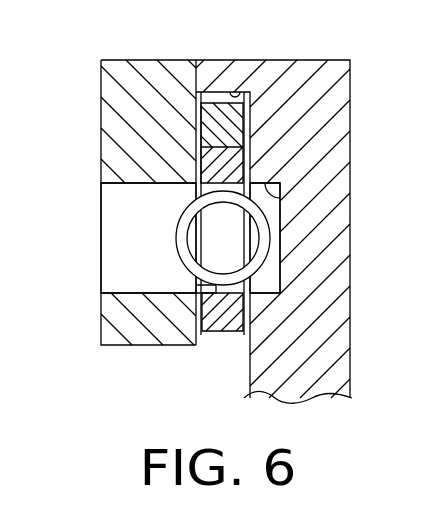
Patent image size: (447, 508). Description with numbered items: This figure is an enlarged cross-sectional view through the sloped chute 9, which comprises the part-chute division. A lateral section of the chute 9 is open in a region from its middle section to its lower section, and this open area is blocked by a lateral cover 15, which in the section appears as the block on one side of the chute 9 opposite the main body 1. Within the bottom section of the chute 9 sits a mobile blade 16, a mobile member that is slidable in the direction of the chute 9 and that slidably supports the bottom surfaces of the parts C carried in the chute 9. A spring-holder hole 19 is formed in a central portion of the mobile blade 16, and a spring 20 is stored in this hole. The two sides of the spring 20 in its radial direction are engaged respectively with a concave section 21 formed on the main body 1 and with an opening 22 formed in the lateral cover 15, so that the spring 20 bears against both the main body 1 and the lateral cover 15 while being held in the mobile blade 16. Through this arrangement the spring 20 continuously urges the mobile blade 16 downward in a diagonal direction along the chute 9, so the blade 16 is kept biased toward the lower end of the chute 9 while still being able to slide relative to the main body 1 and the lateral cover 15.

The main body 1 is at (350, 100).
The sloped chute 9 is at (246, 90).
The lateral cover 15 is at (117, 116).
The mobile blade 16 is at (223, 322).
The spring-holder hole 19 is at (216, 296).
The spring 20 is at (268, 256).
The concave section 21 is at (280, 200).
The opening 22 is at (117, 246).
The parts C is at (217, 117).